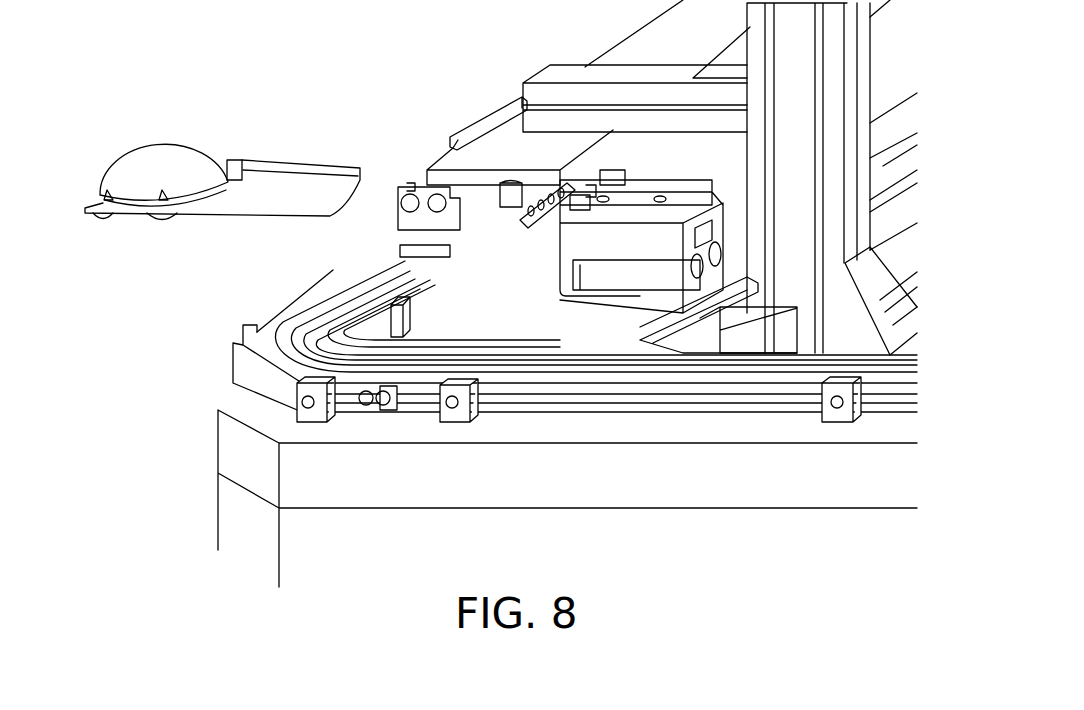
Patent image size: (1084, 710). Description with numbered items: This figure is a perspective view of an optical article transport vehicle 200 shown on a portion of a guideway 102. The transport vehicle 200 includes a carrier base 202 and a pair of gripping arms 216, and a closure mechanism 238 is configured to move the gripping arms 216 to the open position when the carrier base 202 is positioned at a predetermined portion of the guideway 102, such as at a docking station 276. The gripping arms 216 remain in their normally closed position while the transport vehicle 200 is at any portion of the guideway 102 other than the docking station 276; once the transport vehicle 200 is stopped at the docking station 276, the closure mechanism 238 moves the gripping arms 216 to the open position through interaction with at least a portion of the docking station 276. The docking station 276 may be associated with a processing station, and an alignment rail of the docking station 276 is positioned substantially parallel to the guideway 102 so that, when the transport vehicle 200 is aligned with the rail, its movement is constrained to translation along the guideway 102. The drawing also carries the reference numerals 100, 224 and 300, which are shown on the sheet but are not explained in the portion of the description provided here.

The automated system 100 is at (138, 513).
The guideway 102 is at (260, 334).
The transport vehicle 200 is at (451, 142).
The carrier base 202 is at (403, 222).
The gripping arms 216 is at (218, 254).
The retaining clips 224 is at (233, 160).
The closure mechanism 238 is at (455, 112).
The docking station 276 is at (540, 288).
The dome cover 300 is at (150, 150).